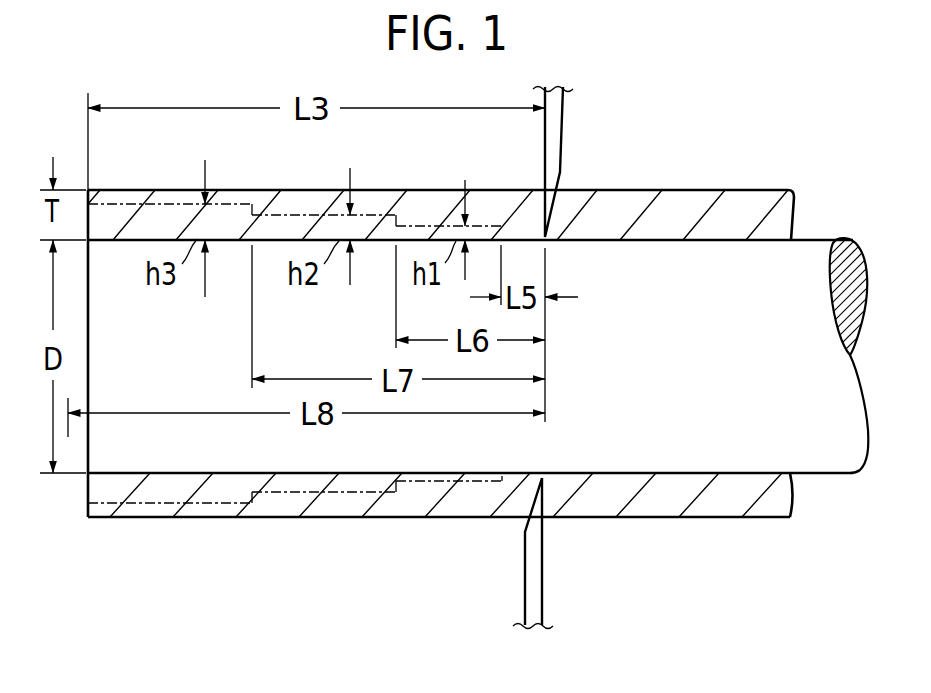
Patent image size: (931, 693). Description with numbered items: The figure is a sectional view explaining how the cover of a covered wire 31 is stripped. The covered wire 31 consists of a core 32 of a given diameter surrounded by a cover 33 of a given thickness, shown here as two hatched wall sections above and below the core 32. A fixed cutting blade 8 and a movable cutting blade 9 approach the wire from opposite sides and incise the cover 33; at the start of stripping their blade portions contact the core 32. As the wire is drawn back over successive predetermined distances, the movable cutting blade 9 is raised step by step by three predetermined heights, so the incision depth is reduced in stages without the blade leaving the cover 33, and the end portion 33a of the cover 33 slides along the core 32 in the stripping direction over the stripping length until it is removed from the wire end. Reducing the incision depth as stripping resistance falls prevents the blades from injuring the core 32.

The fixed cutting blade 8 is at (549, 130).
The movable cutting blade 9 is at (533, 568).
The covered wire 31 is at (649, 188).
The core 32 is at (830, 244).
The cover 33 is at (752, 205).
The end portion of cover 33a is at (428, 190).